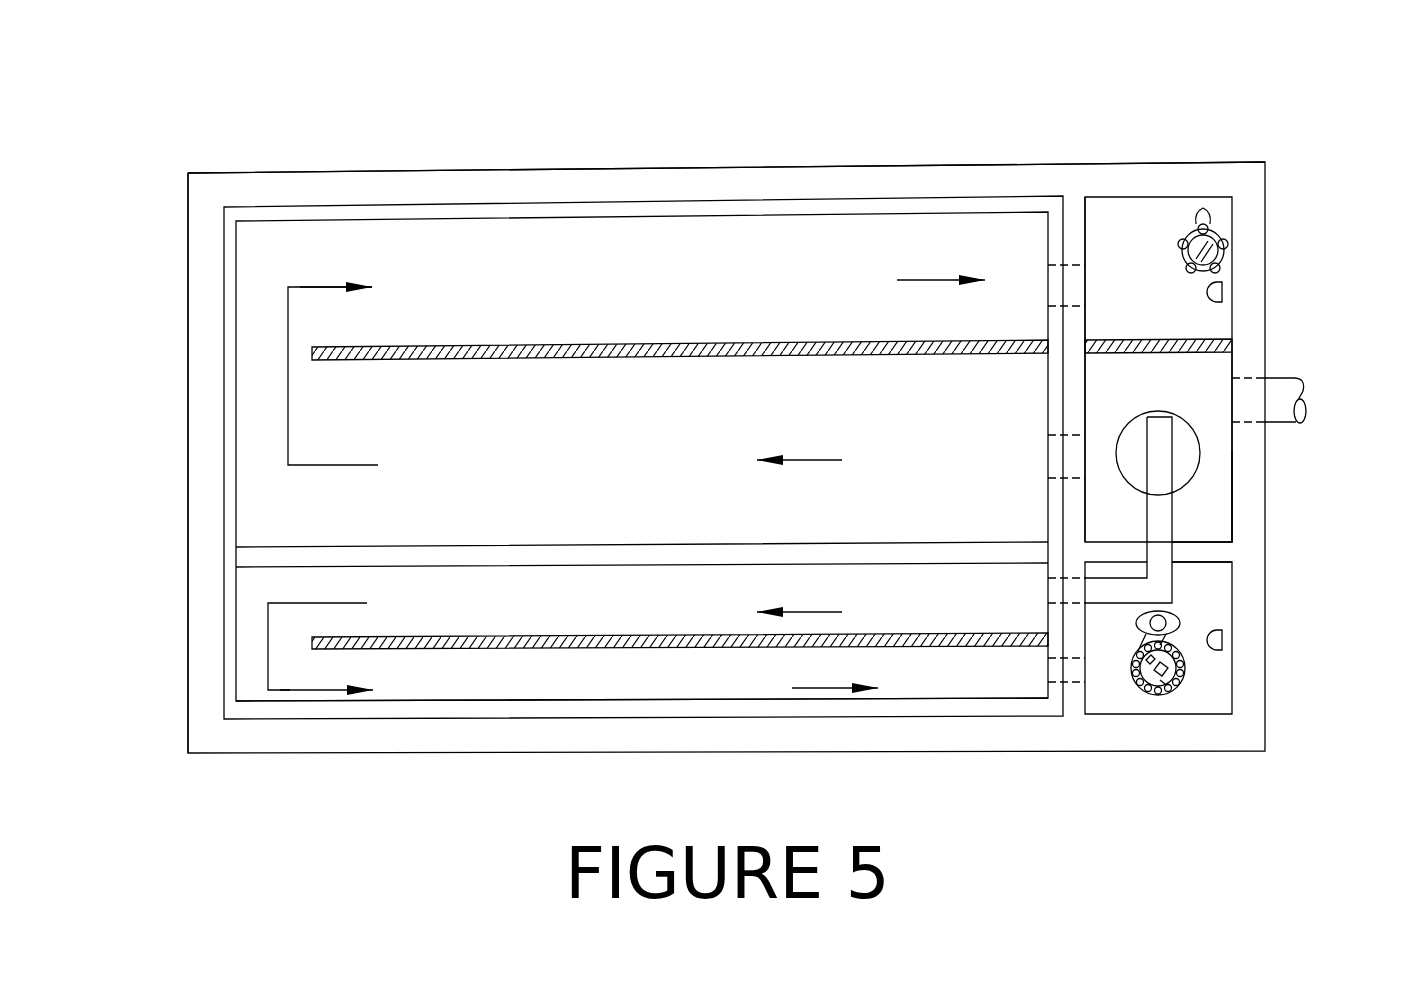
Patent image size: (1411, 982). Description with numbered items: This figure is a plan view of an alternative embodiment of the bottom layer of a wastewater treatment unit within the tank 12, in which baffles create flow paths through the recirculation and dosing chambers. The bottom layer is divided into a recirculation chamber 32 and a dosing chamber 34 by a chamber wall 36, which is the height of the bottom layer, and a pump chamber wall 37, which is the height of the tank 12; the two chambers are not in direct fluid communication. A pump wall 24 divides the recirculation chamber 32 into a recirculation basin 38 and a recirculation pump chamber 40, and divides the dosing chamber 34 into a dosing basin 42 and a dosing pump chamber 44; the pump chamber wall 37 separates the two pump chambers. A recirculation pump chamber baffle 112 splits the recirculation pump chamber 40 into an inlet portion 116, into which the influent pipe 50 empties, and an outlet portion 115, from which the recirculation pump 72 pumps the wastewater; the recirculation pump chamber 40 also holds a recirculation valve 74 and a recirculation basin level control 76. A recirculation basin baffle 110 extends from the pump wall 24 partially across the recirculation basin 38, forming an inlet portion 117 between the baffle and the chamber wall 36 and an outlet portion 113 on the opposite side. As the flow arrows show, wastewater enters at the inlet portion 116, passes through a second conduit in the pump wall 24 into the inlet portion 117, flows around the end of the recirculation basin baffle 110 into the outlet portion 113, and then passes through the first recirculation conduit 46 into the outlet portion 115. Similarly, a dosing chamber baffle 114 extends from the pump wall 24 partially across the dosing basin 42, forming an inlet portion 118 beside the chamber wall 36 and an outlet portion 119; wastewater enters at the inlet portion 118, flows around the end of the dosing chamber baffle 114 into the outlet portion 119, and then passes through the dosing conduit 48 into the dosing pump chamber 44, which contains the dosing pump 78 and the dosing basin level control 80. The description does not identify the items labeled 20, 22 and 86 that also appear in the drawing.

The tank 12 is at (470, 757).
The regenerator assembly 20 is at (1185, 140).
The top wall 22 is at (633, 157).
The pump wall 24 is at (1085, 412).
The recirculation chamber 32 is at (180, 300).
The dosing chamber 34 is at (177, 668).
The chamber wall 36 is at (635, 545).
The pump chamber wall 37 is at (1186, 562).
The recirculation basin 38 is at (660, 386).
The recirculation pump chamber 40 is at (1235, 365).
The dosing basin 42 is at (975, 608).
The dosing pump chamber 44 is at (1227, 706).
The first recirculation conduit 46 is at (1048, 278).
The dosing conduit 48 is at (1048, 663).
The influent pipe 50 is at (1315, 383).
The recirculation pump 72 is at (1230, 232).
The recirculation valve 74 is at (1175, 447).
The recirculation basin level control 76 is at (1233, 282).
The dosing pump 78 is at (1165, 695).
The dosing basin level control 80 is at (1227, 650).
The conduit 86 is at (1173, 510).
The recirculation basin baffle 110 is at (460, 342).
The recirculation pump chamber baffle 112 is at (1167, 340).
The outlet portion 113 is at (746, 296).
The dosing chamber baffle 114 is at (447, 635).
The outlet portion 115 is at (1223, 322).
The inlet portion 116 is at (1213, 508).
The inlet portion 117 is at (696, 458).
The inlet portion 118 is at (643, 608).
The outlet portion 119 is at (656, 681).